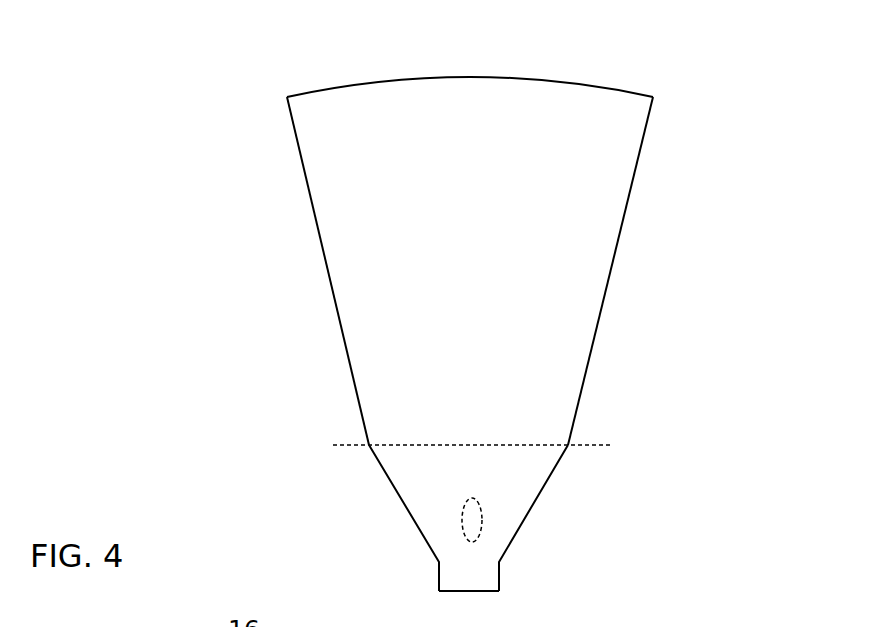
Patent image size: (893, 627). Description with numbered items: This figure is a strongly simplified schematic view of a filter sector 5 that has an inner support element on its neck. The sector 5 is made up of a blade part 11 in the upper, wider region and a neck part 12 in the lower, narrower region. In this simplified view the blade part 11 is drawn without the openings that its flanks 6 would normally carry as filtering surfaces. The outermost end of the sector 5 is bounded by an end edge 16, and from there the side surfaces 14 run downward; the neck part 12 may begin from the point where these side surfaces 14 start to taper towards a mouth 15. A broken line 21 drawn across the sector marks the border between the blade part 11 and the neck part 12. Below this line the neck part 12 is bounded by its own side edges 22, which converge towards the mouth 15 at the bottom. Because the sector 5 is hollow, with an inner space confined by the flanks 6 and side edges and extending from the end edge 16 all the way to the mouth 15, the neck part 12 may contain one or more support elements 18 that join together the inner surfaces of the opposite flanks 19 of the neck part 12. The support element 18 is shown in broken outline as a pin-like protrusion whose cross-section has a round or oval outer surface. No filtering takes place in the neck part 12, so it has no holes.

The sector 5 is at (512, 327).
The blade part 11 is at (490, 236).
The neck part 12 is at (495, 536).
The side surfaces 14 is at (308, 199).
The end edge 16 is at (355, 83).
The flanks 6 is at (567, 317).
The broken line 21 is at (347, 442).
The side edges 22 is at (385, 475).
The support element 18 is at (464, 517).
The flanks of the neck part 19 is at (452, 543).
The mouth 15 is at (472, 591).